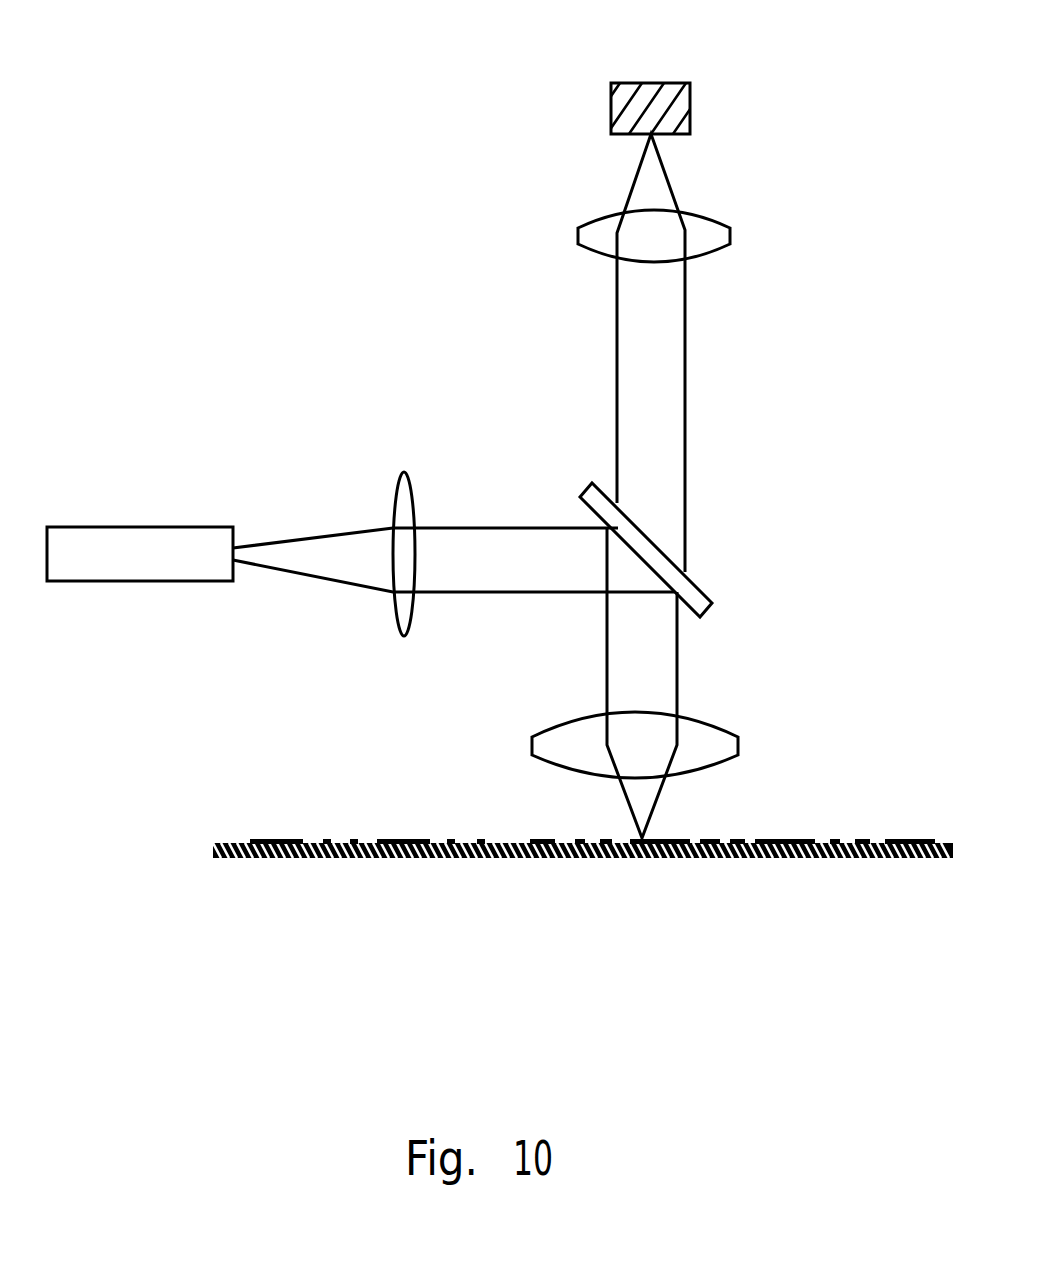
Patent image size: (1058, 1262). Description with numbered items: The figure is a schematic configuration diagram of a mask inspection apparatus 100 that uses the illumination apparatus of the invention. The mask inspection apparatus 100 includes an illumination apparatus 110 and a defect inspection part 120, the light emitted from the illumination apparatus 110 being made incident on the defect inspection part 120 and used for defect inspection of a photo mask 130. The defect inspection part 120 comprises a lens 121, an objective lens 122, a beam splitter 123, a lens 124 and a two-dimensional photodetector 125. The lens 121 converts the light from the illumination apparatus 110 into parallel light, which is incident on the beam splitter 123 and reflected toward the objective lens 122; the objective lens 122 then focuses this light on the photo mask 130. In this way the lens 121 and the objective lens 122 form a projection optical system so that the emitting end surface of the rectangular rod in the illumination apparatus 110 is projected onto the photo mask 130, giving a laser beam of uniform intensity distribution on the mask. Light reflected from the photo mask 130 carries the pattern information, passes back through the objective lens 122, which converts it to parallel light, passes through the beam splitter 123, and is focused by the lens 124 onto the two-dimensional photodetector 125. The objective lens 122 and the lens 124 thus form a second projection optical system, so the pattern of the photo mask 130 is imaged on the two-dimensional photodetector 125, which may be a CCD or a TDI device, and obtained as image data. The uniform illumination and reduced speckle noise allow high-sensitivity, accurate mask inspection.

The mask inspection apparatus 100 is at (945, 36).
The illumination apparatus 110 is at (125, 533).
The defect inspection part 120 is at (512, 318).
The lens 121 is at (408, 478).
The objective lens 122 is at (698, 738).
The beam splitter 123 is at (697, 590).
The lens 124 is at (702, 235).
The two-dimensional photodetector 125 is at (684, 103).
The photo mask 130 is at (568, 860).